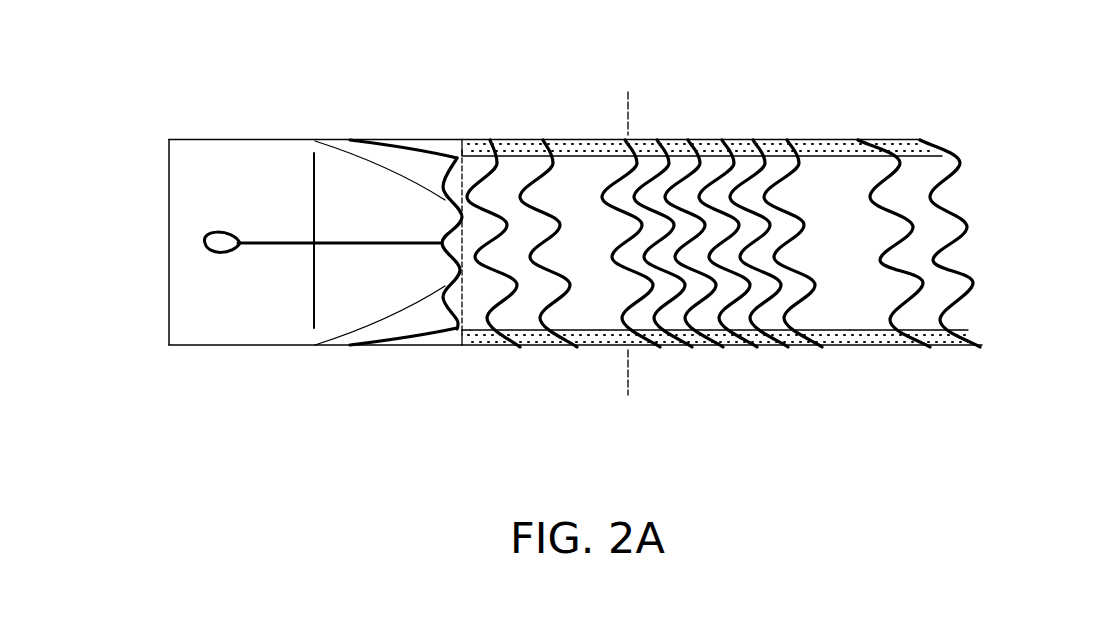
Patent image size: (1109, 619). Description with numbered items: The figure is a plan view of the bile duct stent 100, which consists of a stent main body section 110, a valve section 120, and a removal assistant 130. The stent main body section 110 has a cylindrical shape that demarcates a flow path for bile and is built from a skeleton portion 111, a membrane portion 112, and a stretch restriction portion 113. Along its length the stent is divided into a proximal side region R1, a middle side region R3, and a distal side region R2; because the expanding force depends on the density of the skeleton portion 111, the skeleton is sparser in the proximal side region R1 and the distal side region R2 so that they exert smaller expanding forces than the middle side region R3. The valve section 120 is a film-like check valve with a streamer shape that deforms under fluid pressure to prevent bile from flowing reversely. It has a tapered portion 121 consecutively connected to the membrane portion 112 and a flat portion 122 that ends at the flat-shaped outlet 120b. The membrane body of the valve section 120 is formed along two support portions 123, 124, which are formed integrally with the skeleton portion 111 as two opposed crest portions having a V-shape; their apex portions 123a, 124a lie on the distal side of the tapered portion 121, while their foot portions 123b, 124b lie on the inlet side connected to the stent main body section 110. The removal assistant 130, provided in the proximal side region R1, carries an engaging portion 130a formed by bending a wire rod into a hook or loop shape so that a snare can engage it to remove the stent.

The bile duct stent 100 is at (732, 74).
The stent main body section 110 is at (983, 415).
The skeleton portion 111 is at (533, 140).
The membrane portion 112 is at (578, 175).
The stretch restriction portion 113 is at (808, 152).
The valve section 120 is at (460, 415).
The outlet 120b is at (168, 331).
The tapered portion 121 is at (330, 173).
The flat portion 122 is at (232, 157).
The support portion 123 is at (393, 342).
The apex portion 123a is at (352, 343).
The foot portion 123b is at (449, 340).
The support portion 124 is at (396, 139).
The apex portion 124a is at (353, 138).
The foot portion 124b is at (453, 155).
The removal assistant 130 is at (287, 247).
The engaging portion 130a is at (214, 254).
The proximal side region R1 is at (515, 327).
The distal side region R2 is at (922, 317).
The middle side region R3 is at (707, 318).